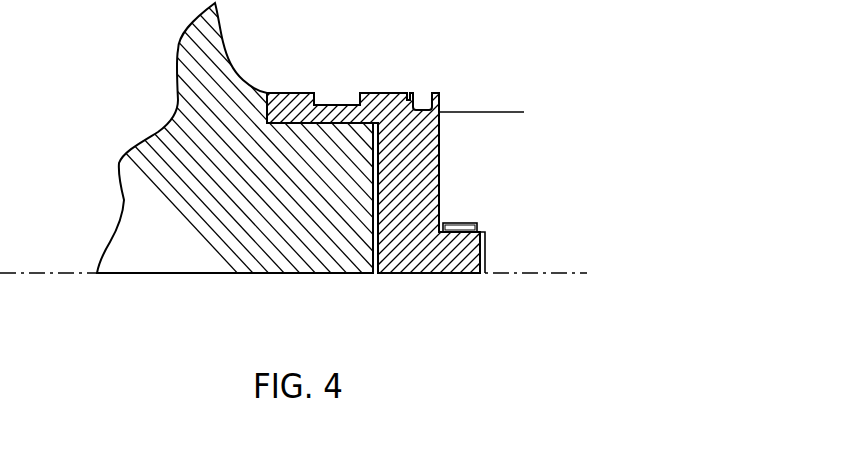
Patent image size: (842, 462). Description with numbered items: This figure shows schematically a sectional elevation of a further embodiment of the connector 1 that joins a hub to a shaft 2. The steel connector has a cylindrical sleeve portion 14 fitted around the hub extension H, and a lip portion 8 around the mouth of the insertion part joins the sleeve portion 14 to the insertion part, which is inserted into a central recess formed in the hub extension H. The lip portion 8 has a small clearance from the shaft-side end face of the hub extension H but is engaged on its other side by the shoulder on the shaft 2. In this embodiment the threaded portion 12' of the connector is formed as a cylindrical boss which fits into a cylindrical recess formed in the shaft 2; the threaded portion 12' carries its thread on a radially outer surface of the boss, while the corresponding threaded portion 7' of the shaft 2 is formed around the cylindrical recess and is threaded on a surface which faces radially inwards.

The wheel / body arrangement 1 is at (122, 106).
The shaft 2 is at (562, 233).
The threaded portion of the shaft 7' is at (460, 183).
The lip portion 8 is at (392, 212).
The threaded portion of the connector 12' is at (467, 273).
The cylindrical sleeve portion 14 is at (295, 104).
The hub extension H is at (303, 246).